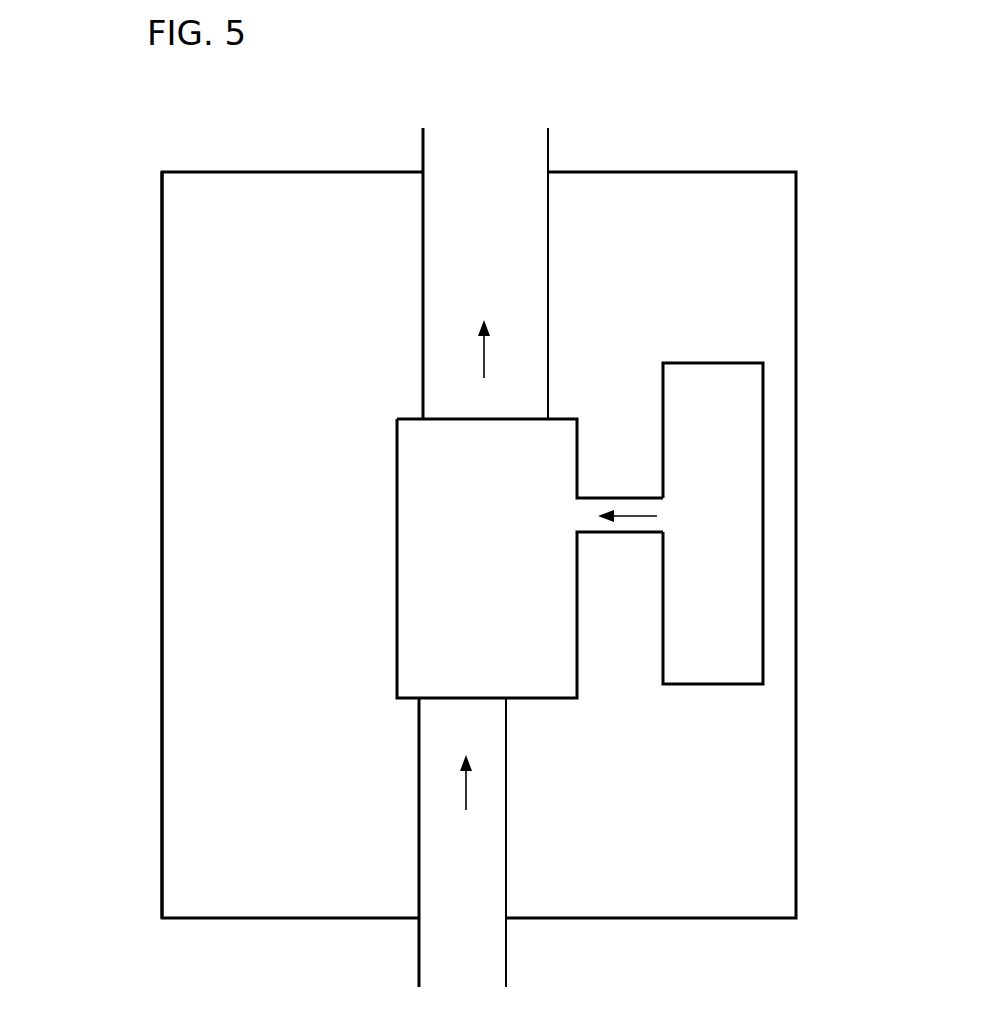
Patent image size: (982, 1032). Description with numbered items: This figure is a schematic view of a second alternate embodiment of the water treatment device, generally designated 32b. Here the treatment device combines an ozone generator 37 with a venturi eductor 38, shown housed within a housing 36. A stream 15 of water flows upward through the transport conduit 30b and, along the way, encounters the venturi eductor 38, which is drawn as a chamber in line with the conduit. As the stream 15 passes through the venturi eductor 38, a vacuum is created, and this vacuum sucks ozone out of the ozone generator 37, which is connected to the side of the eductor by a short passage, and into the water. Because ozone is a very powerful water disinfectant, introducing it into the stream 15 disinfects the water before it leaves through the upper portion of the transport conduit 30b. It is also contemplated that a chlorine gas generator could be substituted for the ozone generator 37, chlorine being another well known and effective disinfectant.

The treatment device 32b is at (122, 395).
The housing 36 is at (796, 302).
The ozone generator 37 is at (763, 568).
The venturi eductor 38 is at (546, 700).
The stream 15 is at (437, 833).
The transport conduit 30b is at (507, 967).